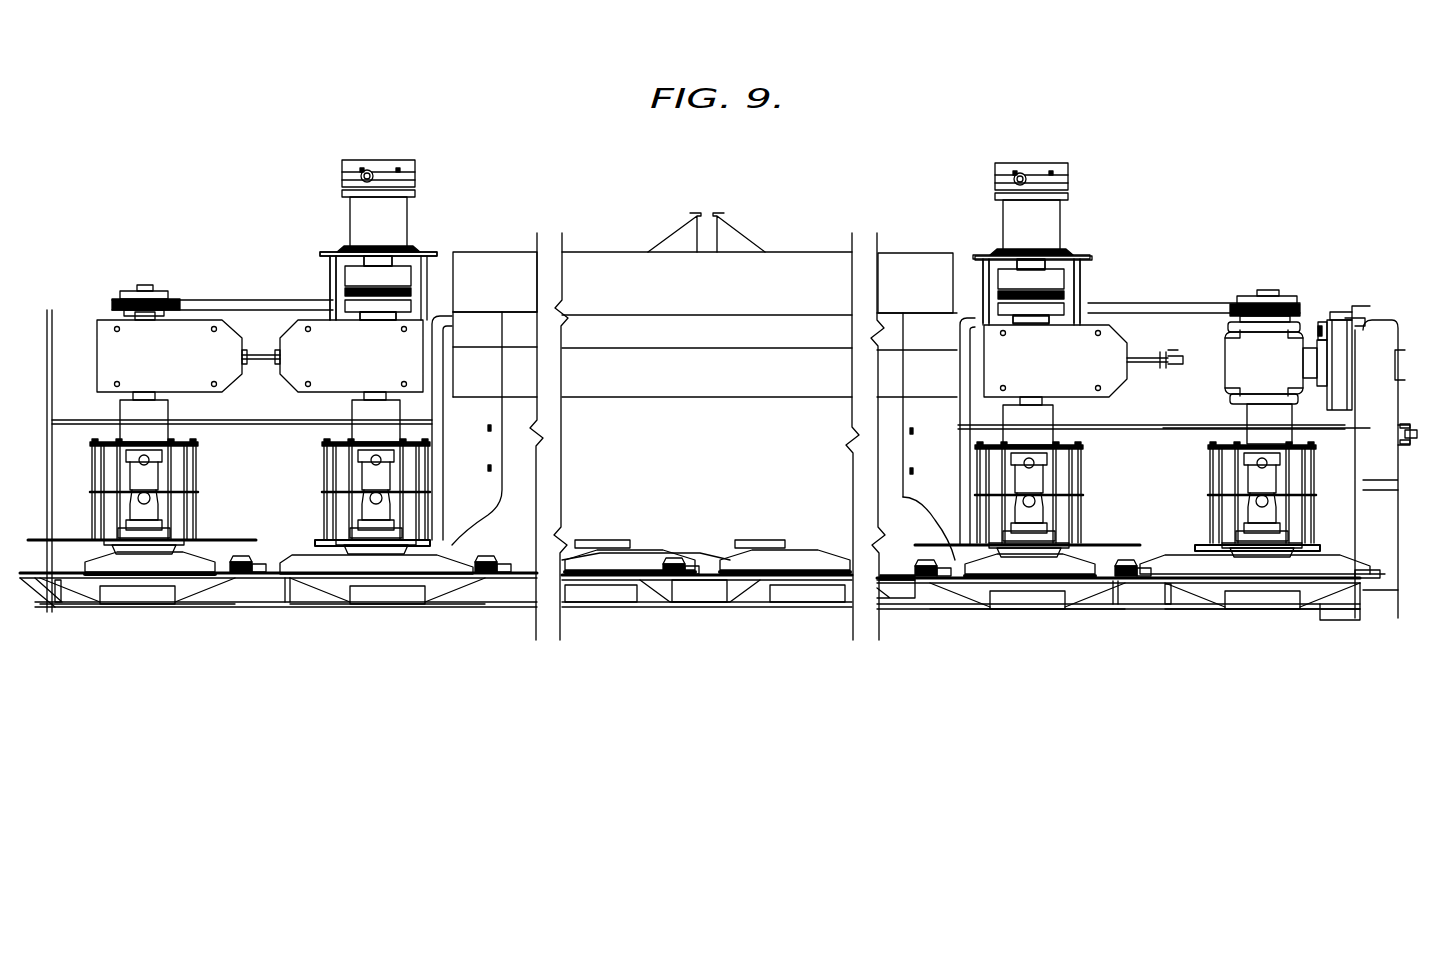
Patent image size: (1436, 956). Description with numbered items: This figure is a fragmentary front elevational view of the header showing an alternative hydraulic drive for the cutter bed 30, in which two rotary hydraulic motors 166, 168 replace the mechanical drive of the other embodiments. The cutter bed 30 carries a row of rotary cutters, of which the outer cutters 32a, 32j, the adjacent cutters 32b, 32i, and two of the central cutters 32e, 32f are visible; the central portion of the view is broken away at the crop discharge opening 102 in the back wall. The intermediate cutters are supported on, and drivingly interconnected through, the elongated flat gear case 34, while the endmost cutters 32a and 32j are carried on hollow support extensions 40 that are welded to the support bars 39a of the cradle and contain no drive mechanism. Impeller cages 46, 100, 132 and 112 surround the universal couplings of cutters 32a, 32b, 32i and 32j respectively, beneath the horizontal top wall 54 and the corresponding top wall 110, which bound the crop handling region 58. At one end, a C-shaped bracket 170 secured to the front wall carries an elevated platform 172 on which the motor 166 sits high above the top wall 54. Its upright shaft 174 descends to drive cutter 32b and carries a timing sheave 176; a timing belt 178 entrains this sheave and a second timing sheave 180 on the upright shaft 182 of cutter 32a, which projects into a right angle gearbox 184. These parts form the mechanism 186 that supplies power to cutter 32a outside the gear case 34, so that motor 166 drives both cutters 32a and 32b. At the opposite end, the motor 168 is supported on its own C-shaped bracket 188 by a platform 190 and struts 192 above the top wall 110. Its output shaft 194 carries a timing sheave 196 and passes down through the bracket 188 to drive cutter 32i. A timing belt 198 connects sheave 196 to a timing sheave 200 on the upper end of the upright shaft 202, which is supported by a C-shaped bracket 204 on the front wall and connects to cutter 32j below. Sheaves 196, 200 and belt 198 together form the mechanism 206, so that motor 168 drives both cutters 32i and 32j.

The cutter bed 30 is at (1270, 618).
The rotary cutter 32a is at (1183, 563).
The rotary cutter 32b is at (1085, 560).
The rotary cutter 32e is at (755, 560).
The rotary cutter 32f is at (648, 555).
The rotary cutter 32i is at (440, 578).
The rotary cutter 32j is at (205, 600).
The gear case 34 is at (930, 612).
The support bar 39a is at (290, 605).
The support extension 40 is at (60, 598).
The impeller cage 46 is at (1208, 468).
The top wall 54 is at (1100, 425).
The crop handling region 58 is at (1188, 443).
The impeller cage 100 is at (1088, 488).
The crop discharge opening 102 is at (737, 442).
The top wall 110 is at (218, 420).
The impeller cage 112 is at (203, 505).
The impeller cage 132 is at (322, 483).
The hydraulic motor 166 is at (1078, 183).
The hydraulic motor 168 is at (420, 182).
The C-shaped bracket 170 is at (996, 365).
The platform 172 is at (1068, 282).
The upright shaft 174 is at (1031, 262).
The timing sheave 176 is at (1010, 325).
The timing belt 178 is at (1180, 308).
The timing sheave 180 is at (1295, 300).
The upright shaft 182 is at (1258, 290).
The right angle gearbox 184 is at (1232, 365).
The drive mechanism 186 is at (1158, 300).
The C-shaped bracket 188 is at (405, 362).
The platform 190 is at (330, 252).
The struts 192 is at (333, 290).
The output shaft 194 is at (380, 262).
The timing sheave 196 is at (350, 320).
The timing belt 198 is at (210, 300).
The timing sheave 200 is at (120, 294).
The upright shaft 202 is at (146, 284).
The C-shaped bracket 204 is at (104, 350).
The drive mechanism 206 is at (252, 300).